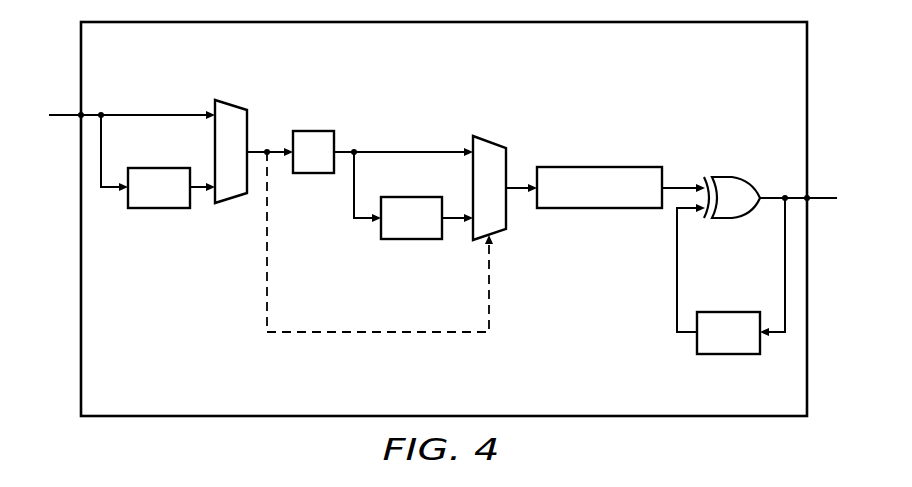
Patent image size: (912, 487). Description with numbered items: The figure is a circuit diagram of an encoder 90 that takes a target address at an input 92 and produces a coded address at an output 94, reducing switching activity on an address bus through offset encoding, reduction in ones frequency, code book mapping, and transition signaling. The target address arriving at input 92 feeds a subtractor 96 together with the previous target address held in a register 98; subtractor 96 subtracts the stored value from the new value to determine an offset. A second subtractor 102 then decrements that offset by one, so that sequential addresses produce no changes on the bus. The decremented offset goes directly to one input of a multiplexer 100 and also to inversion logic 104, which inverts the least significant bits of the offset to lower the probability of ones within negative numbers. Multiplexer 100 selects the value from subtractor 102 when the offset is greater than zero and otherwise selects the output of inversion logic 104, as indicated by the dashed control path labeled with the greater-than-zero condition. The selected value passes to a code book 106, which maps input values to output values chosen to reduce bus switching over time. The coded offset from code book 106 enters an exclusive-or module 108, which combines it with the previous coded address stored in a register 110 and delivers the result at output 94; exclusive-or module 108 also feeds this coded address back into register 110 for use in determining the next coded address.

The encoder 90 is at (258, 418).
The input 92 is at (79, 112).
The output 94 is at (810, 191).
The subtractor 96 is at (237, 106).
The register 98 is at (158, 210).
The multiplexer 100 is at (490, 136).
The subtractor 102 is at (313, 131).
The inversion logic 104 is at (413, 240).
The code book 106 is at (600, 166).
The exclusive-or module 108 is at (723, 175).
The register 110 is at (728, 356).